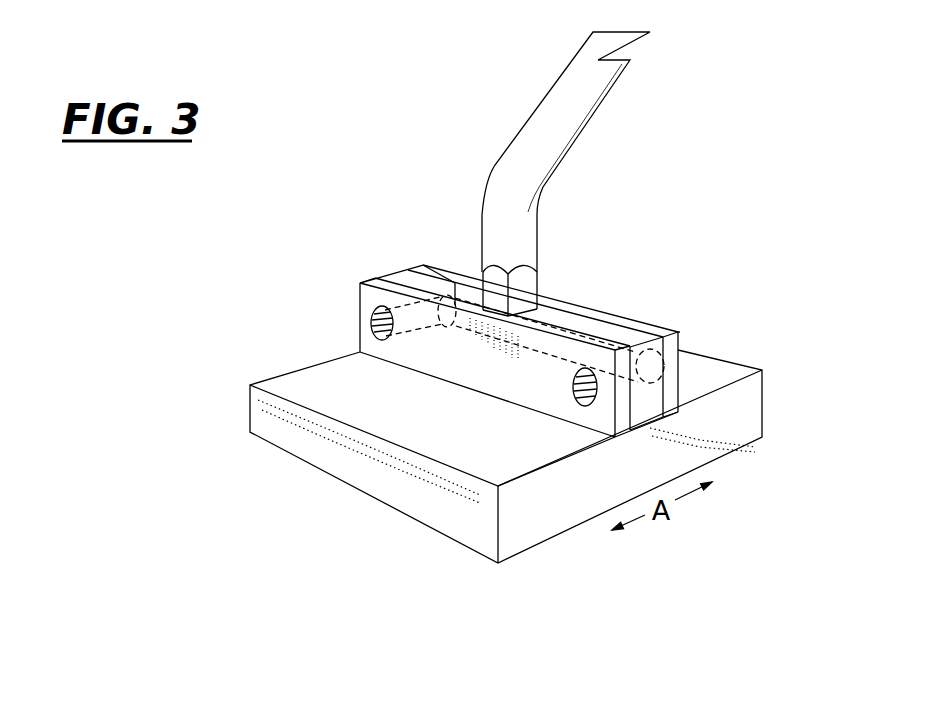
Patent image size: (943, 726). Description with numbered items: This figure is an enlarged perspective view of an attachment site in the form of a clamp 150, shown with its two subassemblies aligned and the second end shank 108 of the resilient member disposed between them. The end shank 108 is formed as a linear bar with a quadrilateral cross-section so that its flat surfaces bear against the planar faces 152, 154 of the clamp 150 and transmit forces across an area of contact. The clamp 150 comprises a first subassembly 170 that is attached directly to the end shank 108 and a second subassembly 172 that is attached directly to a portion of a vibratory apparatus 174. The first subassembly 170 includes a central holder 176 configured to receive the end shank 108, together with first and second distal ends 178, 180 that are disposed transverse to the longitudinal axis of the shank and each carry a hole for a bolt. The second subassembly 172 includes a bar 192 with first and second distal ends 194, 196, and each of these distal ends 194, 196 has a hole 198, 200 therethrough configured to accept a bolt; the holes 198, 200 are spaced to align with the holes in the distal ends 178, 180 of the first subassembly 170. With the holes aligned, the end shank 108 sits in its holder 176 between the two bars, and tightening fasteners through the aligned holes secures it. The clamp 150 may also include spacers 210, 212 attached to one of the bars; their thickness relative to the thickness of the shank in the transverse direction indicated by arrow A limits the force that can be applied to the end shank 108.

The second end shank 108 is at (598, 90).
The clamp 150 is at (673, 268).
The planar face 152 is at (565, 315).
The planar face 154 is at (456, 312).
The first subassembly 170 is at (633, 322).
The second subassembly 172 is at (405, 268).
The vibratory apparatus 174 is at (292, 439).
The central holder 176 is at (524, 277).
The first distal end 178 is at (442, 257).
The second distal end 180 is at (689, 330).
The bar 192 is at (478, 372).
The first distal end 194 is at (361, 276).
The second distal end 196 is at (629, 442).
The hole 198 is at (372, 322).
The hole 200 is at (574, 400).
The spacer 210 is at (406, 274).
The spacer 212 is at (647, 395).